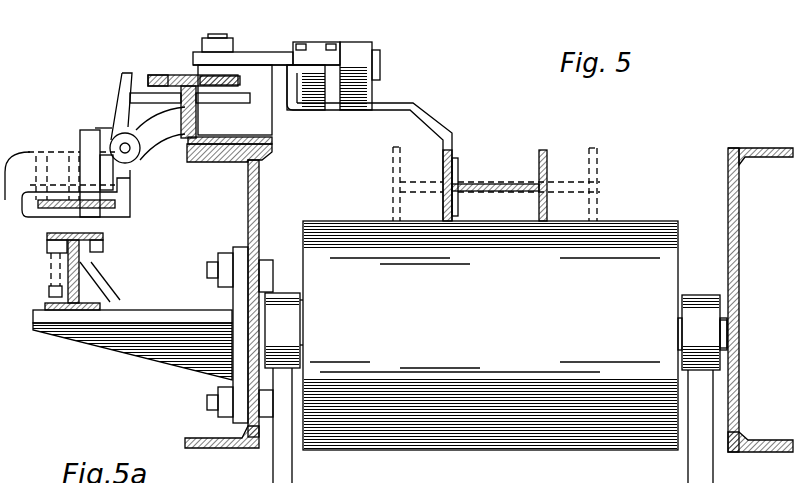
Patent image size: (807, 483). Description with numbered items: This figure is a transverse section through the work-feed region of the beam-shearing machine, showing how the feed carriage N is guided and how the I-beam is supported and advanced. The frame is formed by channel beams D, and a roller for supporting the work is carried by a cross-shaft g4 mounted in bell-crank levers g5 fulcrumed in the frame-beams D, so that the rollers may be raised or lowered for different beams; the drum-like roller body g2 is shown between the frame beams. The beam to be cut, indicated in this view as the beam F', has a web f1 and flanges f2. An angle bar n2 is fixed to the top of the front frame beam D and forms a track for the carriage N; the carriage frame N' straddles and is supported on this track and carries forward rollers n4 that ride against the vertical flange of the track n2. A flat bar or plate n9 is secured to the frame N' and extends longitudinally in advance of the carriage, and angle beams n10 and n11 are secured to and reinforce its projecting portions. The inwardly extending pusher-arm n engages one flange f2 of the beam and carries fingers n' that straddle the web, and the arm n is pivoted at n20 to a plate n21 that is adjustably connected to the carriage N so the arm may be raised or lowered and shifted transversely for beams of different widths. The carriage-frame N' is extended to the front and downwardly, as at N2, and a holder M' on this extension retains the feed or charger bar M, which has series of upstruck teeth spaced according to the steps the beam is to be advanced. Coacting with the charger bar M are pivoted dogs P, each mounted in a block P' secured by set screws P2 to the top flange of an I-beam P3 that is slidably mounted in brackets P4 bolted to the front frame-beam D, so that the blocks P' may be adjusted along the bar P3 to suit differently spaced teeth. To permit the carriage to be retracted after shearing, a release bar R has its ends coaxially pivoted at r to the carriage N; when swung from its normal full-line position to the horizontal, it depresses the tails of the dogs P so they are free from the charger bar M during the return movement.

The release bar R is at (118, 86).
The pivoted dog P is at (80, 156).
The bracket housing M' is at (60, 162).
The pivot r is at (137, 155).
The downward extension of carriage-frame N2 is at (132, 190).
The feed or charger bar M is at (92, 205).
The set screws P2 is at (8, 292).
The block P' is at (31, 280).
The I-beam P3 is at (112, 296).
The brackets P4 is at (172, 320).
The channel beams D is at (262, 200).
The flat bar or plate n9 is at (184, 80).
The angle beam n10 is at (226, 80).
The angle beam n11 is at (160, 78).
The forward rollers n4 is at (223, 104).
The carriage N is at (280, 57).
The plate n21 is at (336, 50).
The pivot n20 is at (381, 53).
The carriage frame N' is at (250, 104).
The angle bar n2 is at (275, 146).
The pusher-arm n is at (389, 143).
The fingers n' is at (486, 173).
The rail F' is at (495, 171).
The rail web f1 is at (485, 192).
The flanges f2 is at (441, 193).
The drum g2 is at (490, 335).
The cross-shaft g4 is at (724, 352).
The bell-crank levers g5 is at (293, 472).